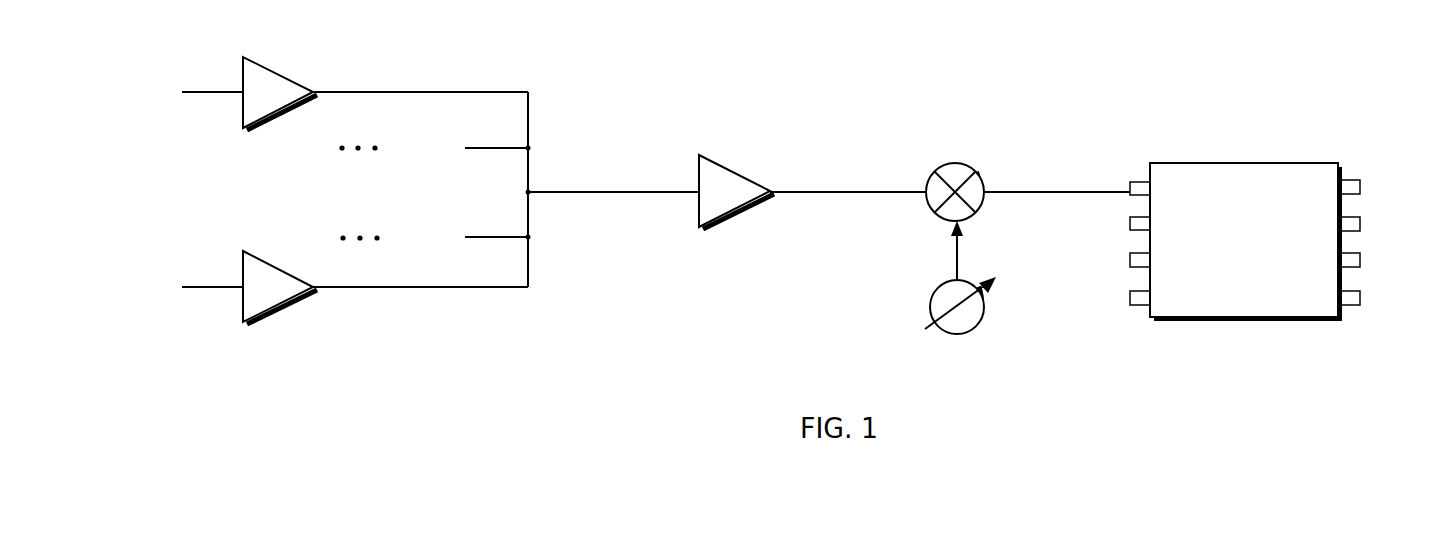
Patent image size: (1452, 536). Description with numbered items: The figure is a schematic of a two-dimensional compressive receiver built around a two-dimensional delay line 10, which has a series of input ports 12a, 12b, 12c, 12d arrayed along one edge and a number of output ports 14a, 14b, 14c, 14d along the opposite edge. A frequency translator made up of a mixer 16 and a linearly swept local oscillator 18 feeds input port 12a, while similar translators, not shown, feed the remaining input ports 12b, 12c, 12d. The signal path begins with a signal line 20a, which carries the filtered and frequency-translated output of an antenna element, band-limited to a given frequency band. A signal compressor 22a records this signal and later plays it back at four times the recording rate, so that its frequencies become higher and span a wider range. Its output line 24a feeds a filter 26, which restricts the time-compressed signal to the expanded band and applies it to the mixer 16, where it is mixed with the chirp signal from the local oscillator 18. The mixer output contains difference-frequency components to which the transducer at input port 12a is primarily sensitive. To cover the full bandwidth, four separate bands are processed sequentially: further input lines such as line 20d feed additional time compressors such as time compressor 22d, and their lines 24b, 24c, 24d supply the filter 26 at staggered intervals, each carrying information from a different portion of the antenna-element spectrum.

The two-dimensional delay line 10 is at (1230, 163).
The input port 12a is at (1144, 181).
The input port 12b is at (1129, 223).
The input port 12c is at (1129, 260).
The input port 12d is at (1129, 298).
The output port 14a is at (1361, 185).
The output port 14b is at (1361, 221).
The output port 14c is at (1361, 257).
The output port 14d is at (1361, 295).
The mixer 16 is at (950, 163).
The linearly swept local oscillator 18 is at (978, 332).
The signal line 20a is at (198, 91).
The input line 20d is at (207, 286).
The signal compressor 22a is at (262, 67).
The time compressor 22d is at (252, 322).
The output line 24a is at (472, 91).
The line 24b is at (497, 147).
The line 24c is at (501, 236).
The line 24d is at (505, 286).
The filter 26 is at (716, 165).